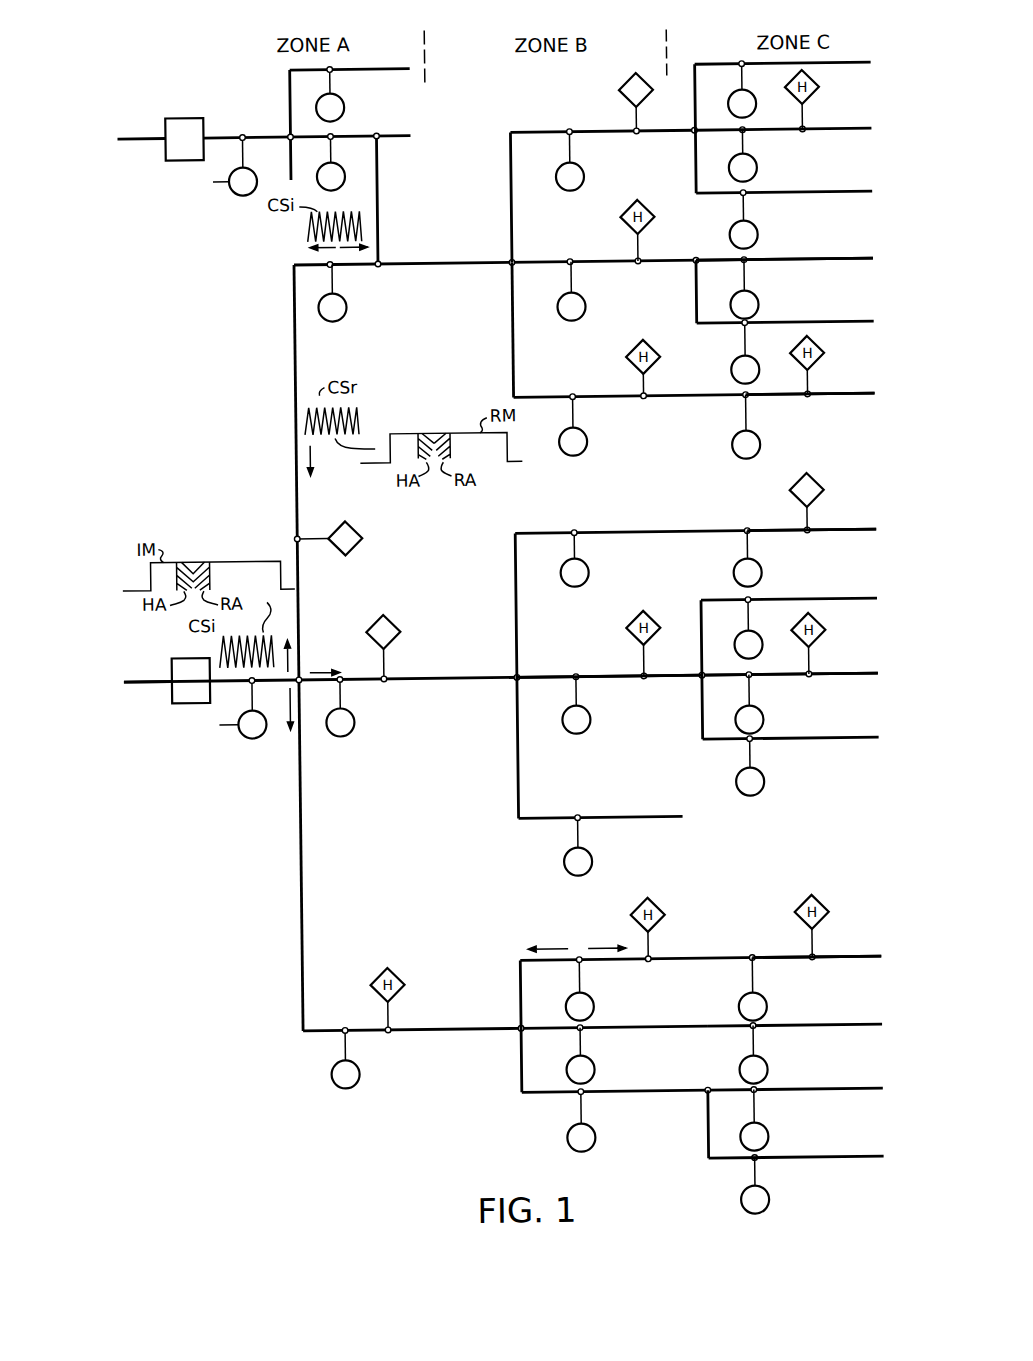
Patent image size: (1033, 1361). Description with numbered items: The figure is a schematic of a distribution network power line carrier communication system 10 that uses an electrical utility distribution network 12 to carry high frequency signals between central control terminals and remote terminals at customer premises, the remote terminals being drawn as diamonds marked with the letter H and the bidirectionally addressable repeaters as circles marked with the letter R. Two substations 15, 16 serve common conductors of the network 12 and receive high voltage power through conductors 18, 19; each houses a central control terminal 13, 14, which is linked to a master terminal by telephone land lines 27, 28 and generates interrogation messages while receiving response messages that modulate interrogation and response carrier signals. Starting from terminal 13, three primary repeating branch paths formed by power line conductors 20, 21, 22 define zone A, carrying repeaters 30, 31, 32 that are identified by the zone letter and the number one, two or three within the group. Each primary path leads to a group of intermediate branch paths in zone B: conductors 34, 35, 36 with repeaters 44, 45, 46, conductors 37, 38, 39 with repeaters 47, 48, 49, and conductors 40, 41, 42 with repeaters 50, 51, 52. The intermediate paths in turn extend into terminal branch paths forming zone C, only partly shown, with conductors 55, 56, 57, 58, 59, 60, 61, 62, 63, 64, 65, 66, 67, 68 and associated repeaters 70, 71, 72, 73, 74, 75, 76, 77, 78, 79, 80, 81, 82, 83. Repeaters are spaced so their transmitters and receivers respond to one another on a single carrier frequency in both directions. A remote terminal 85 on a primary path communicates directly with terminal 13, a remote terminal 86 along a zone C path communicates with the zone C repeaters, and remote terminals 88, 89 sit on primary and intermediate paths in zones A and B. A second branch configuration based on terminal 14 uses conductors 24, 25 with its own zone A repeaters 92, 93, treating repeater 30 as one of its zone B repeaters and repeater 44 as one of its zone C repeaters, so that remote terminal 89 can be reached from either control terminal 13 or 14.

The distribution network power line carrier communication system 10 is at (881, 583).
The electrical utility distribution network 12 is at (276, 809).
The central control terminal 13 is at (246, 736).
The central control terminal 14 is at (242, 194).
The distribution substation 15 is at (188, 659).
The distribution substation 16 is at (188, 115).
The conductor 18 is at (146, 679).
The conductor 19 is at (145, 140).
The power line conductor 20 is at (412, 265).
The power line conductor 21 is at (429, 681).
The power line conductor 22 is at (438, 1029).
The power line conductor 24 is at (284, 109).
The power line conductor 25 is at (366, 139).
The telephone land line 27 is at (218, 726).
The telephone land line 28 is at (216, 181).
The repeater 30 is at (332, 322).
The repeater 31 is at (337, 734).
The repeater 32 is at (351, 1076).
The power line conductor 34 is at (605, 135).
The power line conductor 35 is at (623, 268).
The power line conductor 36 is at (618, 399).
The power line conductor 37 is at (619, 537).
The power line conductor 38 is at (620, 679).
The power line conductor 39 is at (598, 823).
The power line conductor 40 is at (656, 963).
The power line conductor 41 is at (592, 1034).
The power line conductor 42 is at (625, 1095).
The repeater 44 is at (560, 171).
The repeater 45 is at (588, 314).
The repeater 46 is at (586, 442).
The repeater 47 is at (585, 580).
The repeater 48 is at (582, 722).
The repeater 49 is at (582, 865).
The repeater 50 is at (583, 1005).
The repeater 51 is at (583, 1073).
The repeater 52 is at (584, 1145).
The power line conductor 55 is at (838, 70).
The power line conductor 56 is at (838, 135).
The power line conductor 57 is at (838, 199).
The power line conductor 58 is at (829, 265).
The power line conductor 59 is at (833, 328).
The power line conductor 60 is at (834, 400).
The power line conductor 61 is at (837, 536).
The power line conductor 62 is at (850, 605).
The power line conductor 63 is at (818, 678).
The power line conductor 64 is at (824, 750).
The power line conductor 65 is at (811, 963).
The power line conductor 66 is at (829, 1031).
The power line conductor 67 is at (826, 1091).
The power line conductor 68 is at (816, 1163).
The repeater 70 is at (742, 105).
The repeater 71 is at (759, 168).
The repeater 72 is at (759, 234).
The repeater 73 is at (759, 303).
The repeater 74 is at (754, 371).
The repeater 75 is at (756, 444).
The repeater 76 is at (757, 574).
The repeater 77 is at (751, 639).
The repeater 78 is at (752, 721).
The repeater 79 is at (756, 789).
The repeater 80 is at (757, 1005).
The repeater 81 is at (760, 1080).
The repeater 82 is at (757, 1149).
The repeater 83 is at (760, 1213).
The remote terminal 85 is at (351, 529).
The remote terminal 86 is at (790, 492).
The remote terminal 88 is at (390, 629).
The remote terminal 89 is at (621, 93).
The repeater 92 is at (318, 106).
The repeater 93 is at (320, 165).